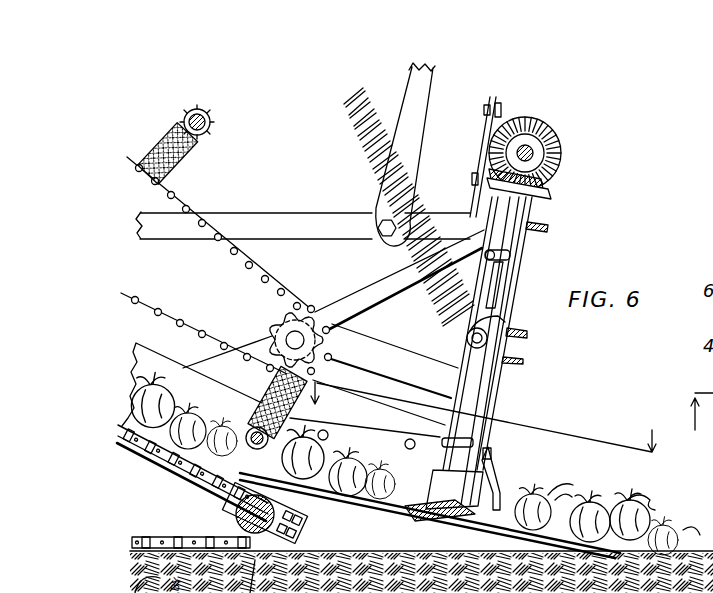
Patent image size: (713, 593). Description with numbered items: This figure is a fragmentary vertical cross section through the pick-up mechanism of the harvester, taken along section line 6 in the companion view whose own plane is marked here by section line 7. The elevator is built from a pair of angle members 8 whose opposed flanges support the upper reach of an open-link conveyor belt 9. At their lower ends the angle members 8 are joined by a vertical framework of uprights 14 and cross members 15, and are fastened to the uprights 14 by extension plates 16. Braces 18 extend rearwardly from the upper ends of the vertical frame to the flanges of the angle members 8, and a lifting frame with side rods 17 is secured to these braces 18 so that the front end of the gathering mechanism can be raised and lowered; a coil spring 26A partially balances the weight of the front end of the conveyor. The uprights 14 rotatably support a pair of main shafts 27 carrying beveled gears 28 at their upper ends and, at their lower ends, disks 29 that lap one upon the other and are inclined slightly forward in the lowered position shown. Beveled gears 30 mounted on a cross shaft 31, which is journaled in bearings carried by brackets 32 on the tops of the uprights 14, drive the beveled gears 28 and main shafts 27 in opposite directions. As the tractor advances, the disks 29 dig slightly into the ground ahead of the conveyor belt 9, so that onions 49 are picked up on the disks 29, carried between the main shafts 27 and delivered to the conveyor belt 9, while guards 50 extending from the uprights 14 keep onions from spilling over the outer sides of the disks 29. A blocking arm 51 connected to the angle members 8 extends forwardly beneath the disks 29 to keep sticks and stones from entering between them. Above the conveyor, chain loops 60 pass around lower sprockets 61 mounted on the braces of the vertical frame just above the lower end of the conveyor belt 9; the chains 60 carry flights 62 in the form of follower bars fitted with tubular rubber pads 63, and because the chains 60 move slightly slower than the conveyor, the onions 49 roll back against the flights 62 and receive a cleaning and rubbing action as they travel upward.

The section line 6— 6 is at (700, 422).
The section line 7— 7 is at (487, 417).
The angle members 8 is at (152, 457).
The conveyor belt 9 is at (188, 462).
The uprights 14 is at (496, 399).
The cross members 15 is at (527, 337).
The extension plates 16 is at (358, 436).
The side rods 17 is at (425, 107).
The braces 18 is at (239, 216).
The coil spring 26A is at (443, 292).
The main shafts 27 is at (510, 282).
The beveled gears 28 is at (549, 188).
The disks 29 is at (368, 505).
The beveled gears 30 is at (548, 130).
The cross shaft 31 is at (534, 151).
The brackets 32 is at (487, 127).
The onions 49 is at (187, 394).
The guards 50 is at (503, 490).
The blocking arm 51 is at (292, 496).
The chain loops 60 is at (280, 286).
The sprockets 61 is at (268, 328).
The flights 62 is at (183, 152).
The pads 63 is at (213, 118).